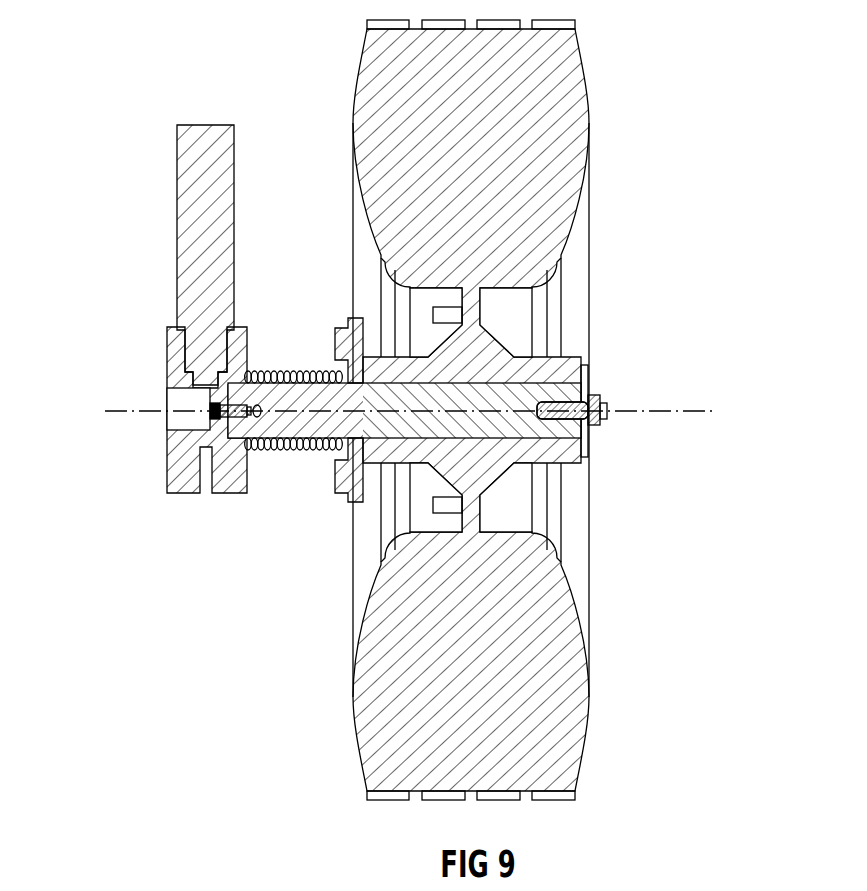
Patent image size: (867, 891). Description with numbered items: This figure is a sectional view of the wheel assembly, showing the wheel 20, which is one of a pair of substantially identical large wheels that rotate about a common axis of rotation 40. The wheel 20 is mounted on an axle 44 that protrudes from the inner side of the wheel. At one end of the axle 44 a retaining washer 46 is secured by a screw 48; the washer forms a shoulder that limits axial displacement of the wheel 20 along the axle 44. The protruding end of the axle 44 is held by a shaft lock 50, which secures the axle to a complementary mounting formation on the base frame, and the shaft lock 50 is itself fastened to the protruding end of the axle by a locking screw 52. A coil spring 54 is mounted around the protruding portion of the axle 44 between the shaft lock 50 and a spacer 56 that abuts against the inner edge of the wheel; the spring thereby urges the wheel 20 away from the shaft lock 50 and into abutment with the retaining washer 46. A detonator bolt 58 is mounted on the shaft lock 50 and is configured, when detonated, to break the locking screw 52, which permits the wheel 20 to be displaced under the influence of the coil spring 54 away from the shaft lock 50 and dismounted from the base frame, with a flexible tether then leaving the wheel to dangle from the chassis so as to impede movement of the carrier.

The wheel 20 is at (678, 103).
The axis of rotation 40 is at (692, 410).
The axle 44 is at (498, 405).
The retaining washer 46 is at (650, 313).
The screw 48 is at (643, 470).
The shaft lock 50 is at (130, 334).
The locking screw 52 is at (243, 408).
The coil spring 54 is at (265, 512).
The spacer 56 is at (328, 530).
The detonator bolt 58 is at (203, 207).